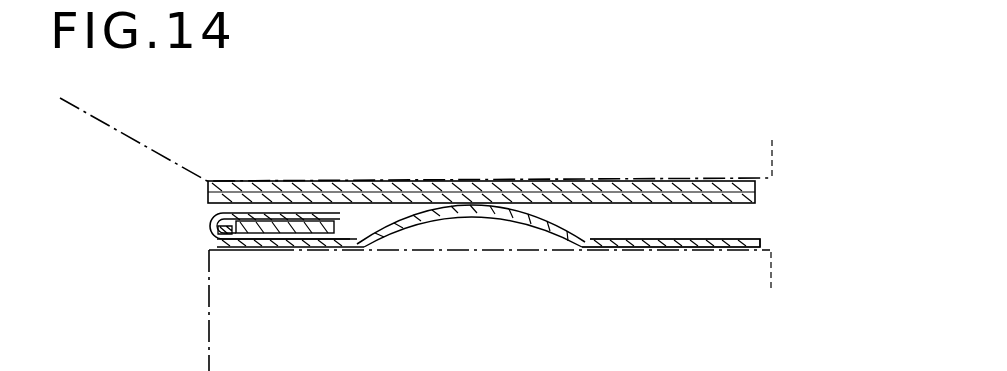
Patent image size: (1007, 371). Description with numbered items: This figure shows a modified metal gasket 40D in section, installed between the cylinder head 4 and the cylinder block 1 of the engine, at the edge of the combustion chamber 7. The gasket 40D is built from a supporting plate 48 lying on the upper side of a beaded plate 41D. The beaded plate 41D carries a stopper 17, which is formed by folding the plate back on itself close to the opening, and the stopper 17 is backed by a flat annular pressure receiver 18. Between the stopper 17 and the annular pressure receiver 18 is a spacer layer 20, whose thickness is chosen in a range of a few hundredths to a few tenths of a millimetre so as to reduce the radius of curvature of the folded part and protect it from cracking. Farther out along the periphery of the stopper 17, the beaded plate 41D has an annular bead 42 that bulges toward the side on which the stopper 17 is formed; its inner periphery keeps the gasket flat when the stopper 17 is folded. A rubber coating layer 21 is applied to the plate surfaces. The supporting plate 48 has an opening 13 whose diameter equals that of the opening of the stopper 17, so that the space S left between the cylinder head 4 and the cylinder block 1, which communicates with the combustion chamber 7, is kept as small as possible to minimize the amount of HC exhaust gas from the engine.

The cylinder block 1 is at (209, 332).
The cylinder head 4 is at (122, 132).
The combustion chamber 7 is at (102, 260).
The space S is at (235, 200).
The opening 13 is at (212, 234).
The stopper 17 is at (290, 218).
The annular pressure receiver 18 is at (290, 240).
The spacer layer 20 is at (243, 238).
The rubber coating layer 21 is at (633, 204).
The annular bead 42 is at (510, 212).
The supporting plate 48 is at (707, 192).
The modified metal gasket 40D is at (554, 131).
The lower member 41D is at (738, 232).